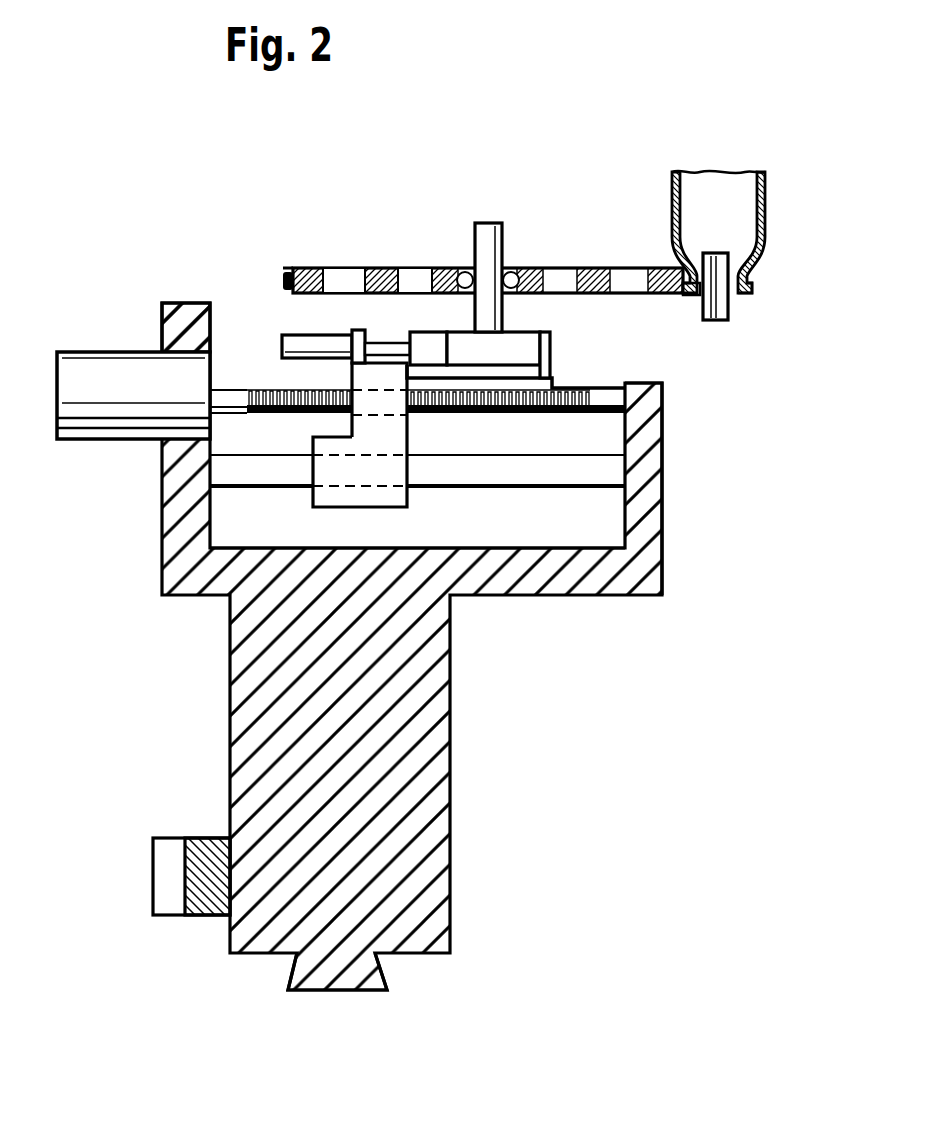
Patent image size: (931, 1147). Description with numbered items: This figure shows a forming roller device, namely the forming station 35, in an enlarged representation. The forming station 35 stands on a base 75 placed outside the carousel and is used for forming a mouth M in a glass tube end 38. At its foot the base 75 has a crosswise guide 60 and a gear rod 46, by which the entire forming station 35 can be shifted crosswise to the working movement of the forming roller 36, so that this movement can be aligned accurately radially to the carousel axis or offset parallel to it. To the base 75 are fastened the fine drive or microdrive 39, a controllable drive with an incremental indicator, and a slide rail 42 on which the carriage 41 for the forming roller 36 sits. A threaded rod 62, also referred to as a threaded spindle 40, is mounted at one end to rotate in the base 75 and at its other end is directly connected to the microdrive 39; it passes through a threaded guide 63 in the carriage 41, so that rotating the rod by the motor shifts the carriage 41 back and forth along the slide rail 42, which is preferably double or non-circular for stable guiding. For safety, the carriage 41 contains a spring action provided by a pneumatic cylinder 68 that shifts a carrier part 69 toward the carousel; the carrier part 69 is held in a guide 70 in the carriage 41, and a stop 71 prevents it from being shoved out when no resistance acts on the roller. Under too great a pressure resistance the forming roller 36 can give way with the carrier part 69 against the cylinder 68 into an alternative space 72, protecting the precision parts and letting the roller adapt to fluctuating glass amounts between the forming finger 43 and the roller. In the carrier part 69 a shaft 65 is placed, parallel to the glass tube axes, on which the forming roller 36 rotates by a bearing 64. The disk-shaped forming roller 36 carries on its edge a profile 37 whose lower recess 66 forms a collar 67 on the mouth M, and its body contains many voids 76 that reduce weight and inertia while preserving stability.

The forming station 35 is at (132, 316).
The forming roller 36 is at (318, 268).
The profile 37 is at (276, 264).
The glass tube end 38 is at (672, 225).
The fine drive (microdrive) 39 is at (88, 408).
The threaded spindle 40 is at (586, 388).
The carriage 41 is at (340, 495).
The slide rail 42 is at (505, 470).
The forming finger 43 is at (712, 318).
The gear rod 46 is at (205, 862).
The crosswise guide 60 is at (343, 985).
The threaded rod 62 is at (300, 415).
The threaded guide 63 is at (390, 420).
The bearing 64 is at (517, 270).
The shaft 65 is at (482, 240).
The lower recess 66 is at (285, 286).
The collar 67 is at (752, 291).
The pneumatic cylinder 68 is at (290, 348).
The carrier part 69 is at (505, 345).
The guide 70 is at (418, 342).
The stop 71 is at (548, 345).
The alternative space 72 is at (362, 342).
The base 75 is at (400, 782).
The voids 76 is at (403, 277).
The mouth M is at (766, 277).